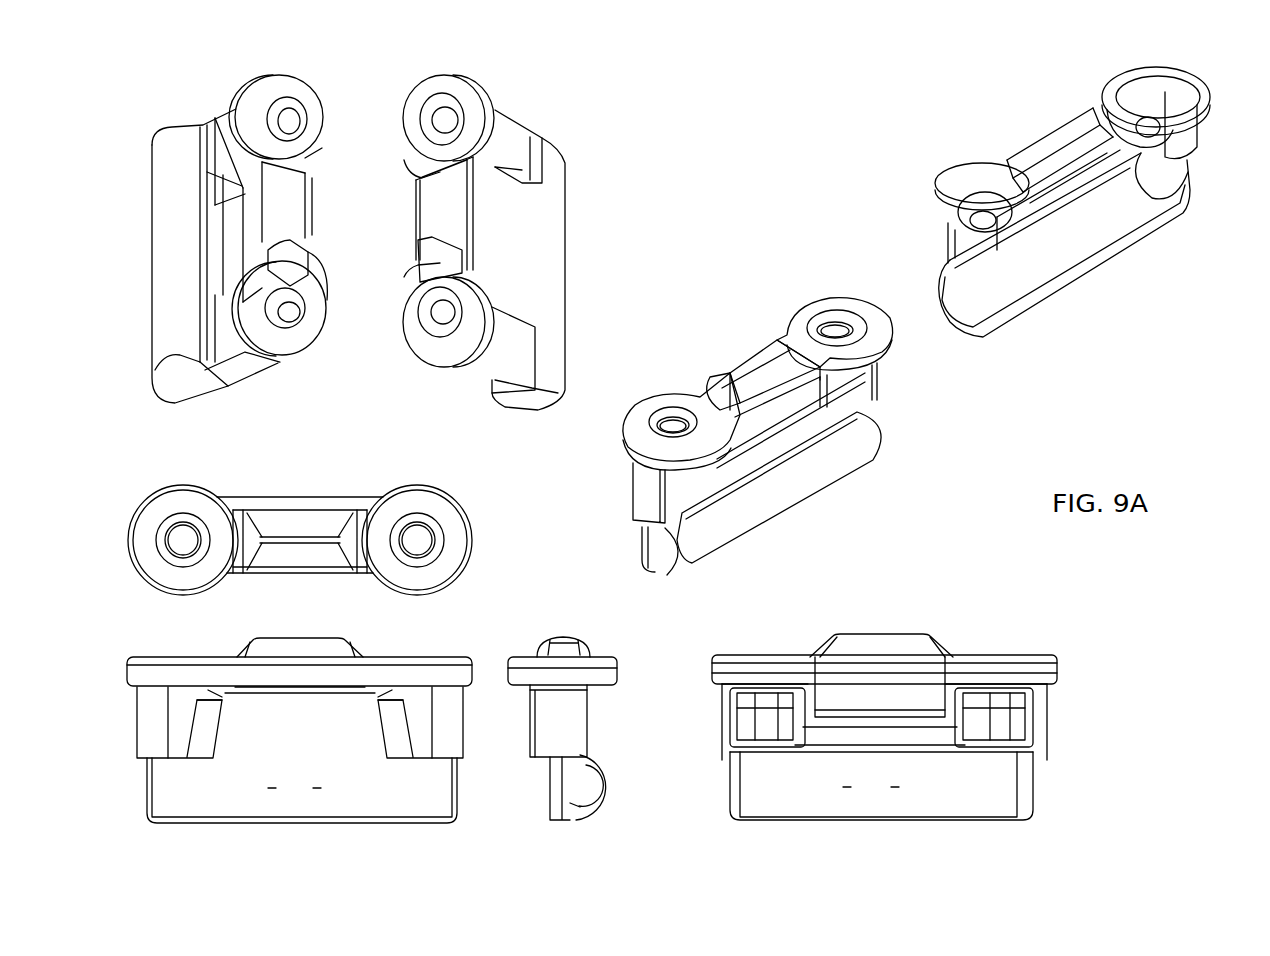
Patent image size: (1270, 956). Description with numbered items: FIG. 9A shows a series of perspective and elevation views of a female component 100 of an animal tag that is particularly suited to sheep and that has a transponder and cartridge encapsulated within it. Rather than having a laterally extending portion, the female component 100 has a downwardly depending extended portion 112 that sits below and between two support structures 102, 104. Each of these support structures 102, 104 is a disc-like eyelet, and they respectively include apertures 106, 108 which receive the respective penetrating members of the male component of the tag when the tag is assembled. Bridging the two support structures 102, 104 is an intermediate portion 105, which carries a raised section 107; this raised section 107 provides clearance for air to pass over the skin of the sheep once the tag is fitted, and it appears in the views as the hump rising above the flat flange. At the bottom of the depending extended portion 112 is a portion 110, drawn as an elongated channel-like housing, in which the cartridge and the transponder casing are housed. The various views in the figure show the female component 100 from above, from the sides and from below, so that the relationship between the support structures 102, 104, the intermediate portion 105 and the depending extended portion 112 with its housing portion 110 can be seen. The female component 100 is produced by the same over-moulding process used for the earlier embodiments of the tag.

The female component 100 is at (773, 517).
The support structure 102 is at (285, 367).
The support structure 104 is at (241, 88).
The intermediate portion 105 is at (320, 229).
The aperture 106 is at (893, 331).
The raised section 107 is at (767, 360).
The aperture 108 is at (663, 425).
The portion housing the cartridge and transponder casing 110 is at (168, 284).
The extended portion 112 is at (543, 243).